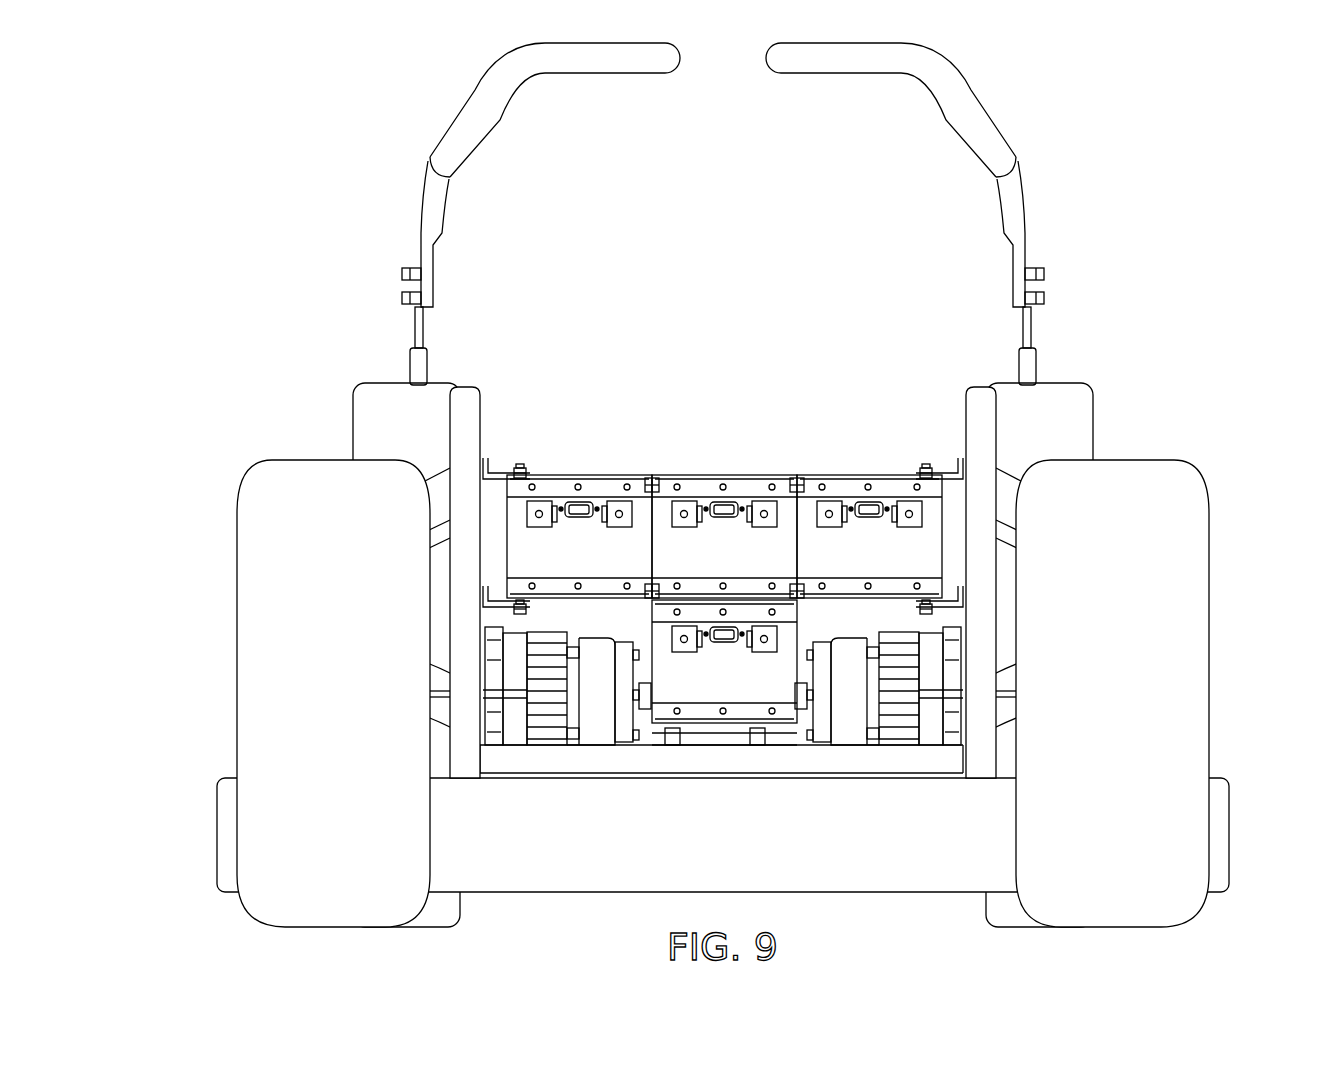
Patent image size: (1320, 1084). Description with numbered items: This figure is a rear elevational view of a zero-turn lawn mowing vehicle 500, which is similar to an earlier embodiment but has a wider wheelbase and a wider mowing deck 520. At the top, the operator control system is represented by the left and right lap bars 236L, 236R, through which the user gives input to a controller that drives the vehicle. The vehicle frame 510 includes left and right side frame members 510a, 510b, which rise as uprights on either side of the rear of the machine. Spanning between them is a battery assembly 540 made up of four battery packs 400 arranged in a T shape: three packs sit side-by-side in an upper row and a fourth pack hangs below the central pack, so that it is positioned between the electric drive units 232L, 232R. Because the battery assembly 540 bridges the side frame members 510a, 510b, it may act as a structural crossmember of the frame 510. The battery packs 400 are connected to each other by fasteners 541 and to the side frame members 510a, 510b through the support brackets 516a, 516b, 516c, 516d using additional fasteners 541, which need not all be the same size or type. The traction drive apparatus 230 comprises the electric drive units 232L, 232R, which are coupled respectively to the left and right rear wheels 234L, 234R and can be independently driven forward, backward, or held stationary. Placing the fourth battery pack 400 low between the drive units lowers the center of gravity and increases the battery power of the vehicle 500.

The vehicle 500 is at (225, 136).
The lap bar 236L is at (608, 62).
The lap bar 236R is at (838, 62).
The side frame member 510a is at (467, 392).
The side frame member 510b is at (979, 392).
The vehicle frame 510 is at (728, 560).
The battery assembly 540 is at (724, 576).
The fasteners 541 is at (540, 479).
The support bracket 516a is at (499, 470).
The support bracket 516b is at (948, 470).
The support bracket 516c is at (484, 597).
The support bracket 516d is at (965, 592).
The battery pack 400 is at (602, 561).
The rear wheel 234L is at (362, 824).
The rear wheel 234R is at (1143, 824).
The electric drive unit 232L is at (590, 721).
The electric drive unit 232R is at (856, 721).
The traction drive apparatus 230 is at (723, 818).
The mowing deck 520 is at (747, 850).